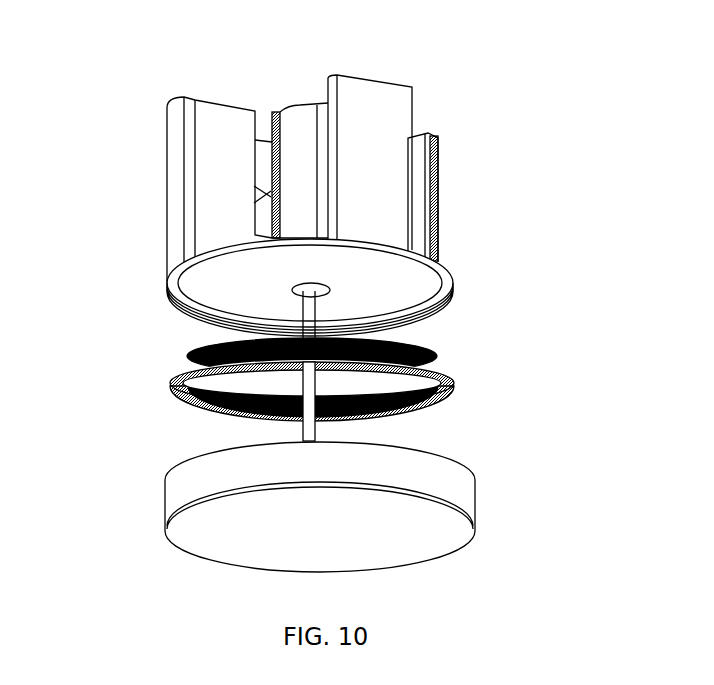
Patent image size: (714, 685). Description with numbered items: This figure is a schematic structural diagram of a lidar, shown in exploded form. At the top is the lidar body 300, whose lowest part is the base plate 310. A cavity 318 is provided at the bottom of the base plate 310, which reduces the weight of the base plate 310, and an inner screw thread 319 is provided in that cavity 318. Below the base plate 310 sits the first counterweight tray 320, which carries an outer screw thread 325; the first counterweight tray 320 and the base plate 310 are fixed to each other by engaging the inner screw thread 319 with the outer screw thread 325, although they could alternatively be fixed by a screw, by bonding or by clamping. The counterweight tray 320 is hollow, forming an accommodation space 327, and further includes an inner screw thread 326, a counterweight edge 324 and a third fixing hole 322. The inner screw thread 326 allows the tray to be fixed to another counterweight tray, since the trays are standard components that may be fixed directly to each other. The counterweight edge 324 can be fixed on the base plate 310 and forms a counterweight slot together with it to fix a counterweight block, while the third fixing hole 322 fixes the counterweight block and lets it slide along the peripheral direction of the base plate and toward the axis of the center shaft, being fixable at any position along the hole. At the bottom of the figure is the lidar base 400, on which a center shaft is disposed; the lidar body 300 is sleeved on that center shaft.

The lidar body 300 is at (415, 57).
The base plate 310 is at (240, 288).
The cavity 318 is at (400, 285).
The inner screw thread 319 is at (423, 318).
The outer screw thread 325 is at (190, 358).
The first counterweight tray 320 is at (177, 407).
The third fixing hole 322 is at (450, 405).
The counterweight edge 324 is at (447, 407).
The inner screw thread 326 is at (198, 402).
The accommodation space 327 is at (367, 390).
The lidar base 400 is at (470, 497).